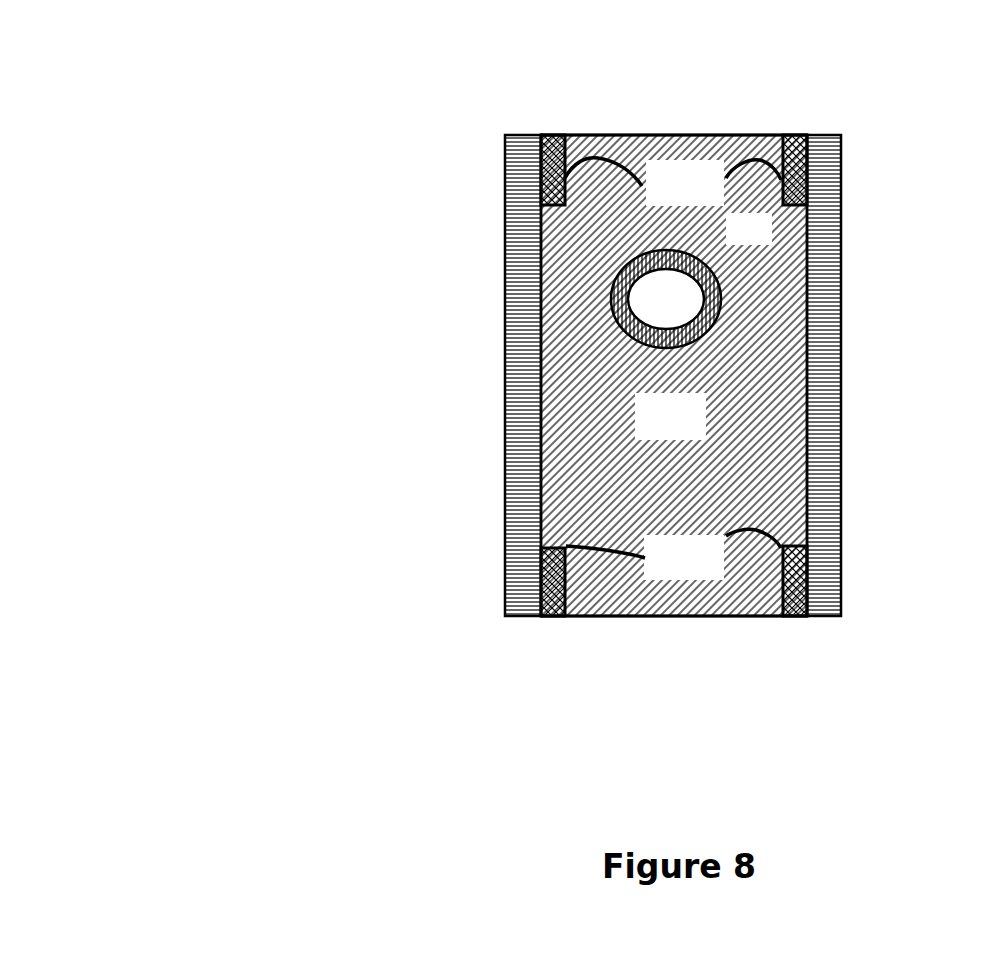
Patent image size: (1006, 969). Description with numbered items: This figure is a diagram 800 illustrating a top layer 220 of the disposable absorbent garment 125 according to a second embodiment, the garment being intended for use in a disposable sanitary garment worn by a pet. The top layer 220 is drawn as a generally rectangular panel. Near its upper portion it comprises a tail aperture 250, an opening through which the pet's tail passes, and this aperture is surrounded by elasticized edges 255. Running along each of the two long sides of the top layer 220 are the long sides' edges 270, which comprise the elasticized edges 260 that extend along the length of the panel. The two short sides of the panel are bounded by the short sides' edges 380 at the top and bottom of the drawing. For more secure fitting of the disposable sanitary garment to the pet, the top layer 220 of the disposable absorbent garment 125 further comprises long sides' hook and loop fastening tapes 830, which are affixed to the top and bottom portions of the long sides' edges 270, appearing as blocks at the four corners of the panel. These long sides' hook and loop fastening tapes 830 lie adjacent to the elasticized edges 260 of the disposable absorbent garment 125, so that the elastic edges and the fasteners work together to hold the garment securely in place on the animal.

The diagram 800 is at (242, 122).
The disposable absorbent garment 125 is at (463, 455).
The top layer 220 is at (674, 375).
The tail aperture 250 is at (666, 299).
The elasticized edges 255 is at (708, 282).
The elasticized edges 260 is at (518, 335).
The long sides' edges 270 is at (497, 532).
The short sides' edges 380 is at (597, 127).
The long sides' hook and loop fastening tapes 830 is at (673, 369).